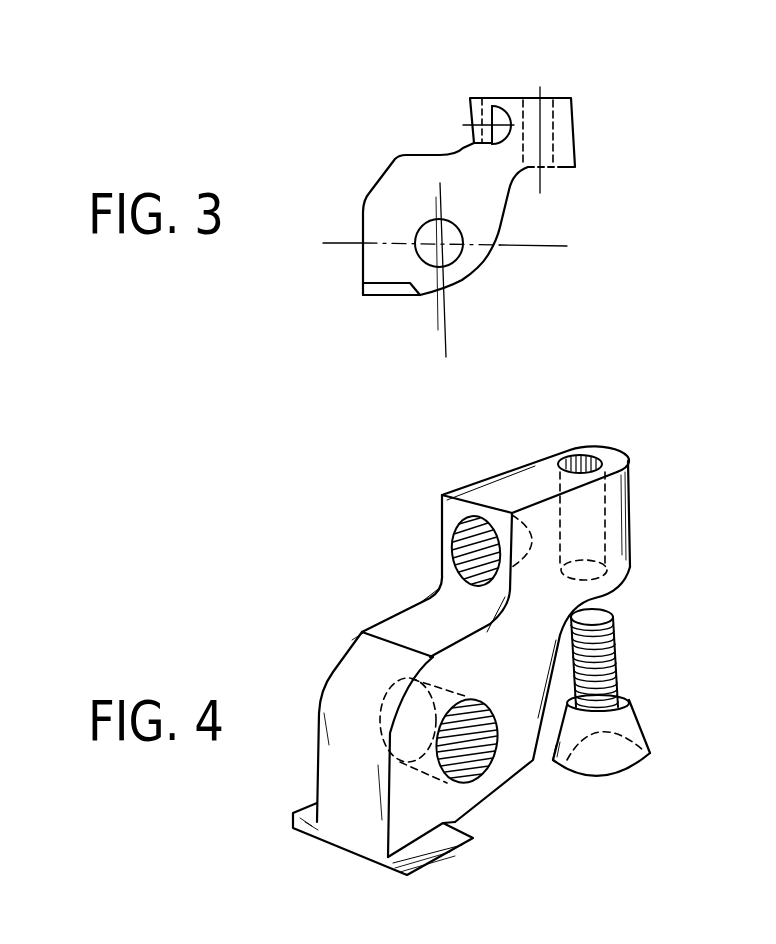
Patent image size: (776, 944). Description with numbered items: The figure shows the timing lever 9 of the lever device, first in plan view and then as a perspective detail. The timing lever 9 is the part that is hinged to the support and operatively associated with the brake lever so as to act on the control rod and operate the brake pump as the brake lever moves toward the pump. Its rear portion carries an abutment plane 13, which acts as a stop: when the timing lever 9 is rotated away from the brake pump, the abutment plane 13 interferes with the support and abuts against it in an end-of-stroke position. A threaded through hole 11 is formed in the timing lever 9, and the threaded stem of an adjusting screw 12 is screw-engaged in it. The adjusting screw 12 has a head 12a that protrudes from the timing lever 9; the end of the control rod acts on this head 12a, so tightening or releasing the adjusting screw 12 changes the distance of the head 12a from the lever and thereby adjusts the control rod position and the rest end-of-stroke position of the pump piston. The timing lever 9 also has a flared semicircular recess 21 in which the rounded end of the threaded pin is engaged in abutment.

In FIG. 3, the timing lever 9 is at (390, 139).
In FIG. 4, the timing lever 9 is at (361, 610).
In FIG. 3, the threaded through hole 11 is at (545, 100).
In FIG. 4, the threaded through hole 11 is at (581, 453).
In FIG. 4, the adjusting screw 12 is at (622, 665).
In FIG. 4, the head 12a is at (635, 731).
In FIG. 3, the abutment plane 13 is at (384, 297).
In FIG. 3, the flared semicircular recess 21 is at (480, 119).
In FIG. 4, the flared semicircular recess 21 is at (468, 548).